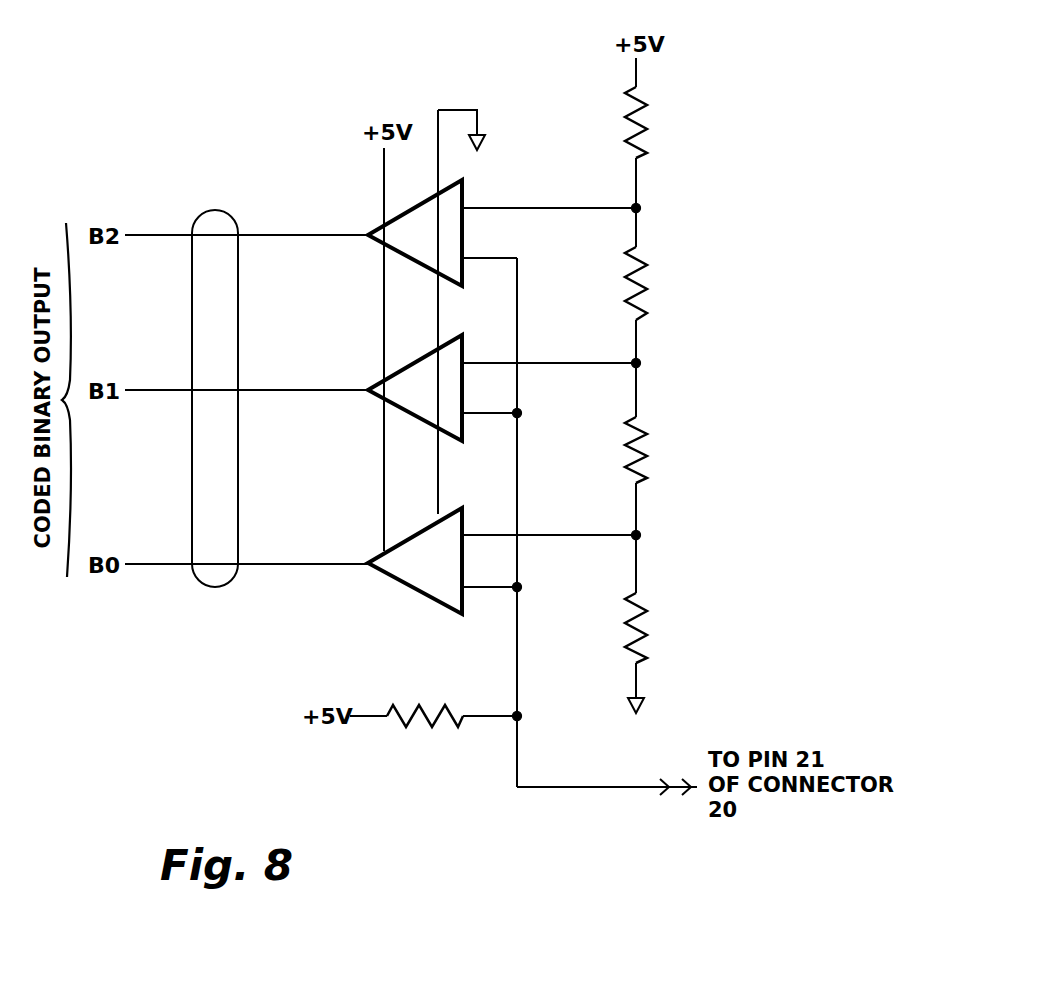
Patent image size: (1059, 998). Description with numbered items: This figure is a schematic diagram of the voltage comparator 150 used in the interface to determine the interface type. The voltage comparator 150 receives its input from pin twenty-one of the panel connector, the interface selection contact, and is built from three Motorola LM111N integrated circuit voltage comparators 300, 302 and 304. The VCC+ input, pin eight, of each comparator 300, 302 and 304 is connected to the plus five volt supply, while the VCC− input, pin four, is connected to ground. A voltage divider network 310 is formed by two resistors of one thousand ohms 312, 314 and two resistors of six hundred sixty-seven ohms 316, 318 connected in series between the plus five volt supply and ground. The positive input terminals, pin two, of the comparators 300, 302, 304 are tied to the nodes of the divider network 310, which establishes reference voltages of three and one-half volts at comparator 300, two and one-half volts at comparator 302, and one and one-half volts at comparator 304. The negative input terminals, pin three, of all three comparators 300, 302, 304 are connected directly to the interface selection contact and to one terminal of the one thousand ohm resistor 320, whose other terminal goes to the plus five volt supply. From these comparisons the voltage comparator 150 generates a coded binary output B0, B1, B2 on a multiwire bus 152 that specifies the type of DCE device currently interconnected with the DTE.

The voltage comparator 150 is at (313, 182).
The multiwire bus 152 is at (213, 210).
The integrated circuit voltage comparator 300 is at (463, 273).
The integrated circuit voltage comparator 302 is at (463, 428).
The integrated circuit voltage comparator 304 is at (463, 601).
The voltage divider network 310 is at (684, 204).
The 1000 ohm resistor 312 is at (647, 103).
The 1000 ohm resistor 314 is at (649, 608).
The 667 ohm resistor 316 is at (648, 264).
The 667 ohm resistor 318 is at (649, 433).
The 1000 ohm resistor 320 is at (429, 727).